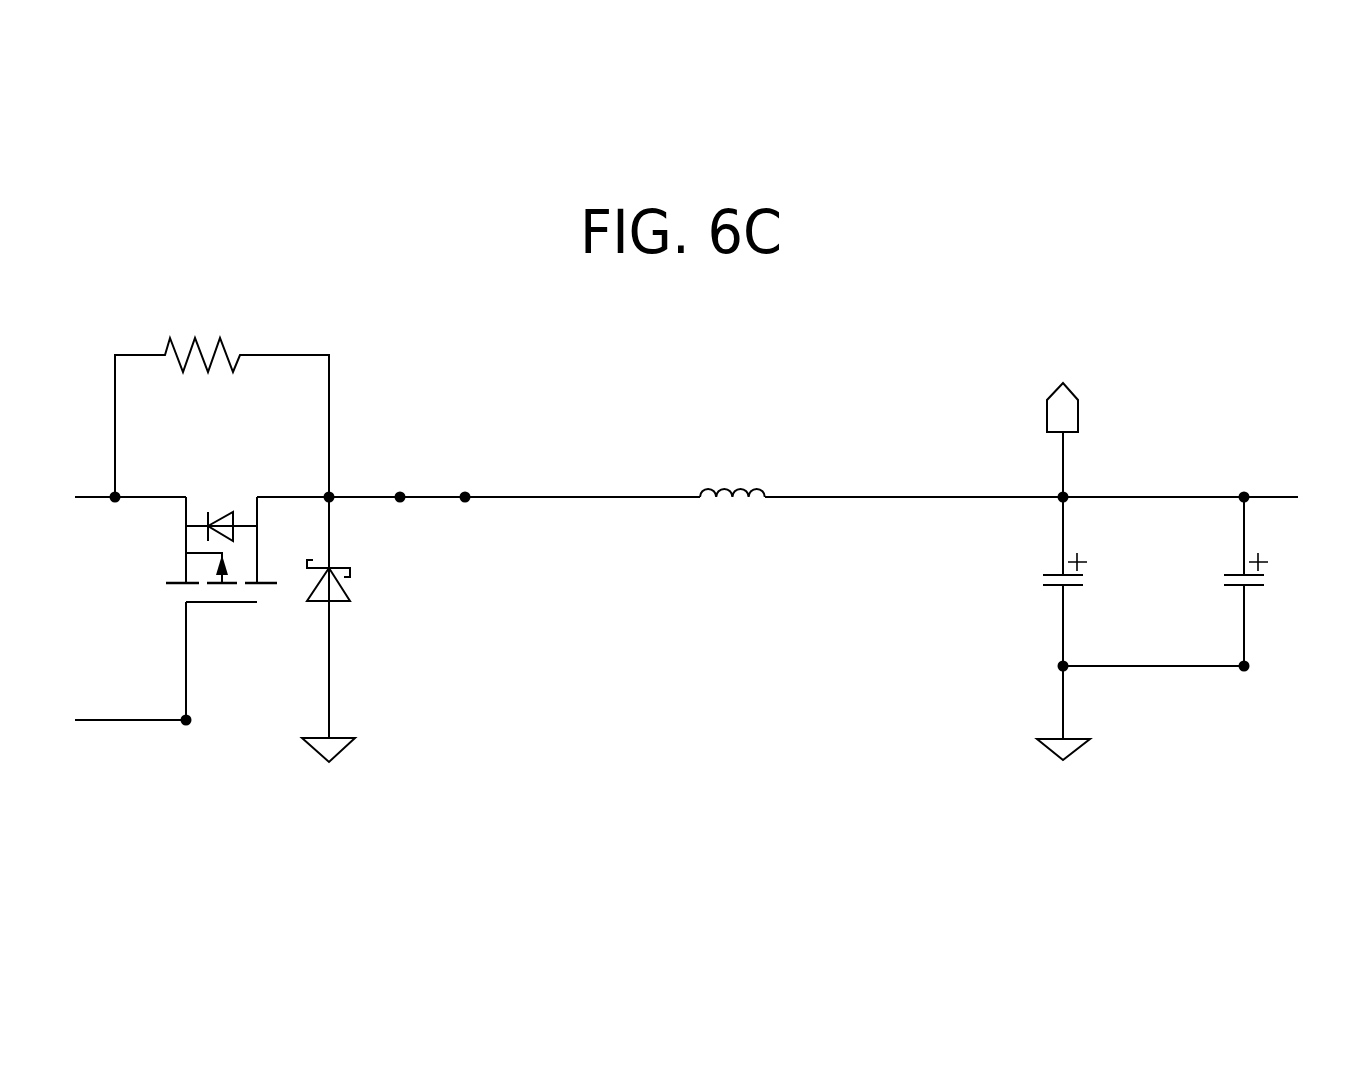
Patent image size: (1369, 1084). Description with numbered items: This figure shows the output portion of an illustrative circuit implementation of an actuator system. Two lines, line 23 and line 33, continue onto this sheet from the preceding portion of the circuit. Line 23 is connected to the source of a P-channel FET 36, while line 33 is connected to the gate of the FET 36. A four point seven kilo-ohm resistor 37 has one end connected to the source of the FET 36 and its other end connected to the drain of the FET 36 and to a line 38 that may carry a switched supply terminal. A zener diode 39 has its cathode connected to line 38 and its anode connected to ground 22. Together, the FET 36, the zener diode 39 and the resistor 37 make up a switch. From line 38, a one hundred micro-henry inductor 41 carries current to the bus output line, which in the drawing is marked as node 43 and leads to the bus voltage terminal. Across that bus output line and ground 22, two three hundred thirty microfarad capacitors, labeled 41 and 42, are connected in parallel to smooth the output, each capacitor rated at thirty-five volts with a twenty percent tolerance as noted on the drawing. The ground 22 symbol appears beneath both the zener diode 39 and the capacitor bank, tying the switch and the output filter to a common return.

The ground 22 is at (312, 738).
The line 23 is at (93, 495).
The line 33 is at (131, 719).
The P-channel FET 36 is at (224, 511).
The resistor 37 is at (209, 338).
The line 38 is at (553, 496).
The zener diode 39 is at (351, 588).
The inductor 41 is at (728, 500).
The capacitor 42 is at (1235, 573).
The Vbus output node 43 is at (1004, 495).